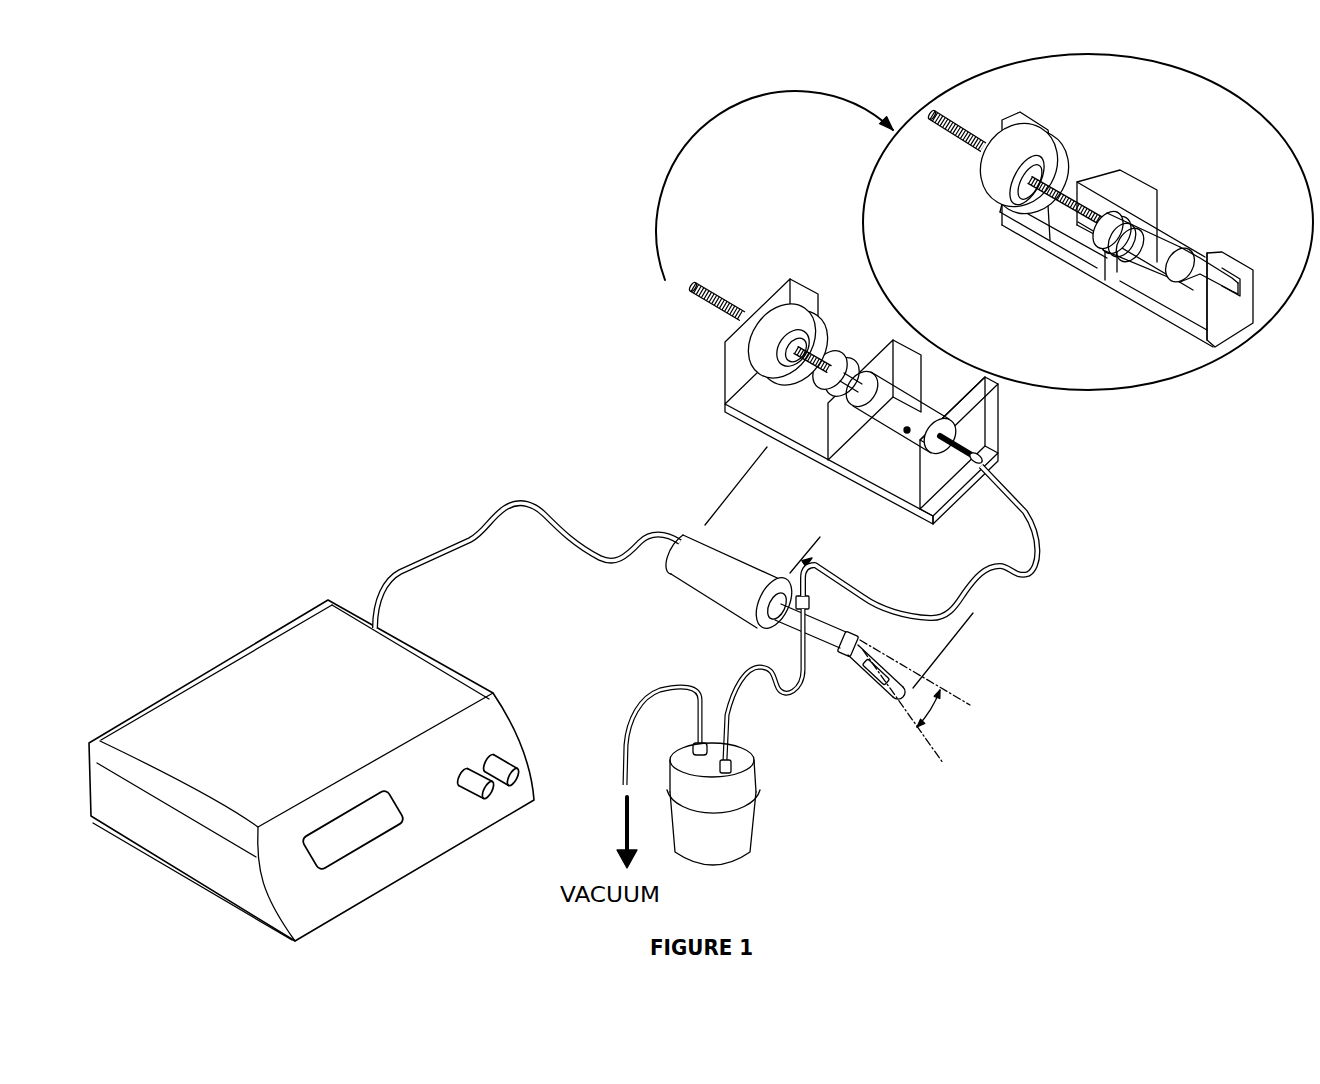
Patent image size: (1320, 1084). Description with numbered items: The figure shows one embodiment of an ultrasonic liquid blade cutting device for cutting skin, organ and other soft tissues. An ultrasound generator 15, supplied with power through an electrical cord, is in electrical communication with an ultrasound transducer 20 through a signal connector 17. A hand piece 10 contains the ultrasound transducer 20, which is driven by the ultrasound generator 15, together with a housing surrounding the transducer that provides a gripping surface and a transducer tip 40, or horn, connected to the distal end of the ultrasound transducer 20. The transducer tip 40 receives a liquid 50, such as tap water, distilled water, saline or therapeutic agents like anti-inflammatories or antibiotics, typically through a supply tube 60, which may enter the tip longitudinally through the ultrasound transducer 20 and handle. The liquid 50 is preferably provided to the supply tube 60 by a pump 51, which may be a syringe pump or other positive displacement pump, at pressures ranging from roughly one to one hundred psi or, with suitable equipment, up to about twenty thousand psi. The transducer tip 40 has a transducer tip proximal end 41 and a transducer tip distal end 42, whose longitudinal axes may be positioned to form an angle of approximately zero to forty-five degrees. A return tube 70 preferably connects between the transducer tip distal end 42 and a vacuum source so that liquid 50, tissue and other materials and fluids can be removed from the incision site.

The hand piece 10 is at (953, 627).
The ultrasound generator 15 is at (255, 643).
The signal connector 17 is at (495, 512).
The ultrasound transducer 20 is at (707, 543).
The transducer tip 40 is at (935, 658).
The transducer tip proximal end 41 is at (787, 625).
The transducer tip distal end 42 is at (863, 683).
The liquid 50 is at (807, 401).
The pump 51 is at (715, 373).
The supply tube 60 is at (1042, 545).
The return tube 70 is at (730, 720).